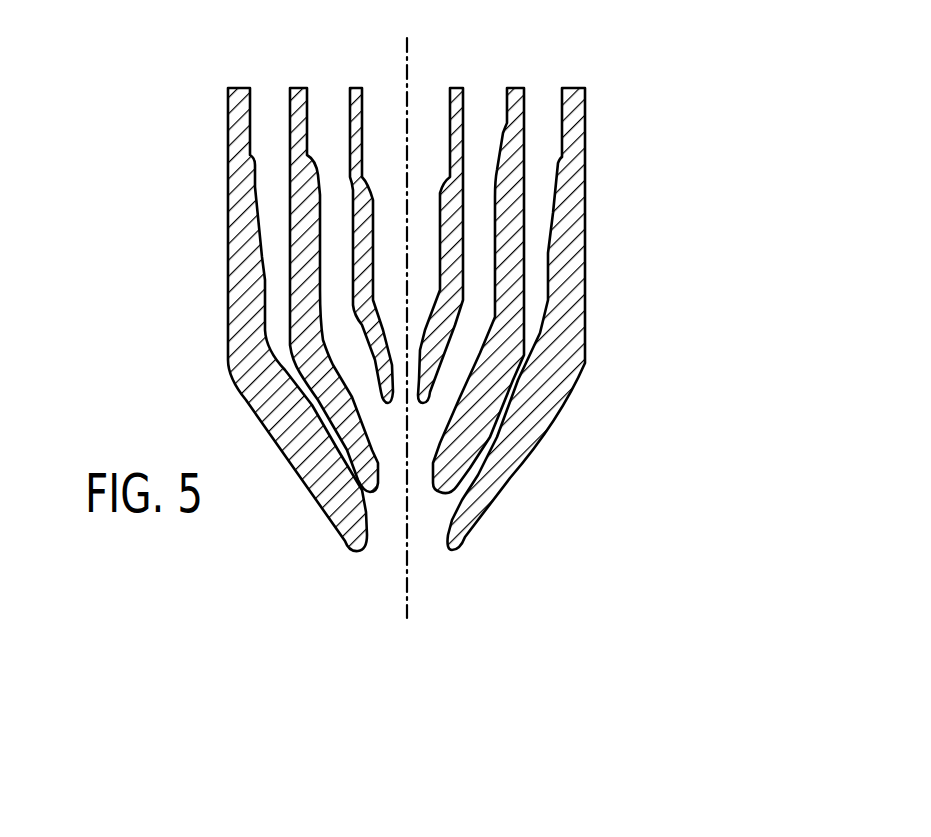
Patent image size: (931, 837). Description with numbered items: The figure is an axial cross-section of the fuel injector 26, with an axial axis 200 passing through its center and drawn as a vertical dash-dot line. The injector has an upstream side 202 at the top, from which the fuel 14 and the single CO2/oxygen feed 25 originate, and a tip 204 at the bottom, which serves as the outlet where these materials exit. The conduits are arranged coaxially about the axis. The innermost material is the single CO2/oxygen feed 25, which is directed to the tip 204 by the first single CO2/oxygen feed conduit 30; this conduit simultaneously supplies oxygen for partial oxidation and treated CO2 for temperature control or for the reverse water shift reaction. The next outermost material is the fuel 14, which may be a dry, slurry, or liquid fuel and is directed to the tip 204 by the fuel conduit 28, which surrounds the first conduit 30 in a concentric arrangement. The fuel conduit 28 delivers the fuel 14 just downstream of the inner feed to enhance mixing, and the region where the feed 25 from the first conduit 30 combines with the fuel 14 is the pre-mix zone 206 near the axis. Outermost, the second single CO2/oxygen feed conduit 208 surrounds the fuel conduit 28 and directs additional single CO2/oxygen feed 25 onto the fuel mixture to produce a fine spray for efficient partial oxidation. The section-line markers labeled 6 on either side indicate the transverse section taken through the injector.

The axial axis 200 is at (405, 62).
The upstream side 202 is at (100, 141).
The single CO2/oxygen feed 25 is at (271, 149).
The fuel 14 is at (331, 149).
The first single CO2/oxygen feed conduit 30 is at (457, 88).
The fuel conduit 28 is at (512, 88).
The second single CO2/oxygen feed conduit 208 is at (571, 88).
The pre-mix zone 206 is at (410, 454).
The tip 204 is at (371, 652).
The fuel injector 26 is at (686, 45).
The section line 6- 6 is at (193, 290).